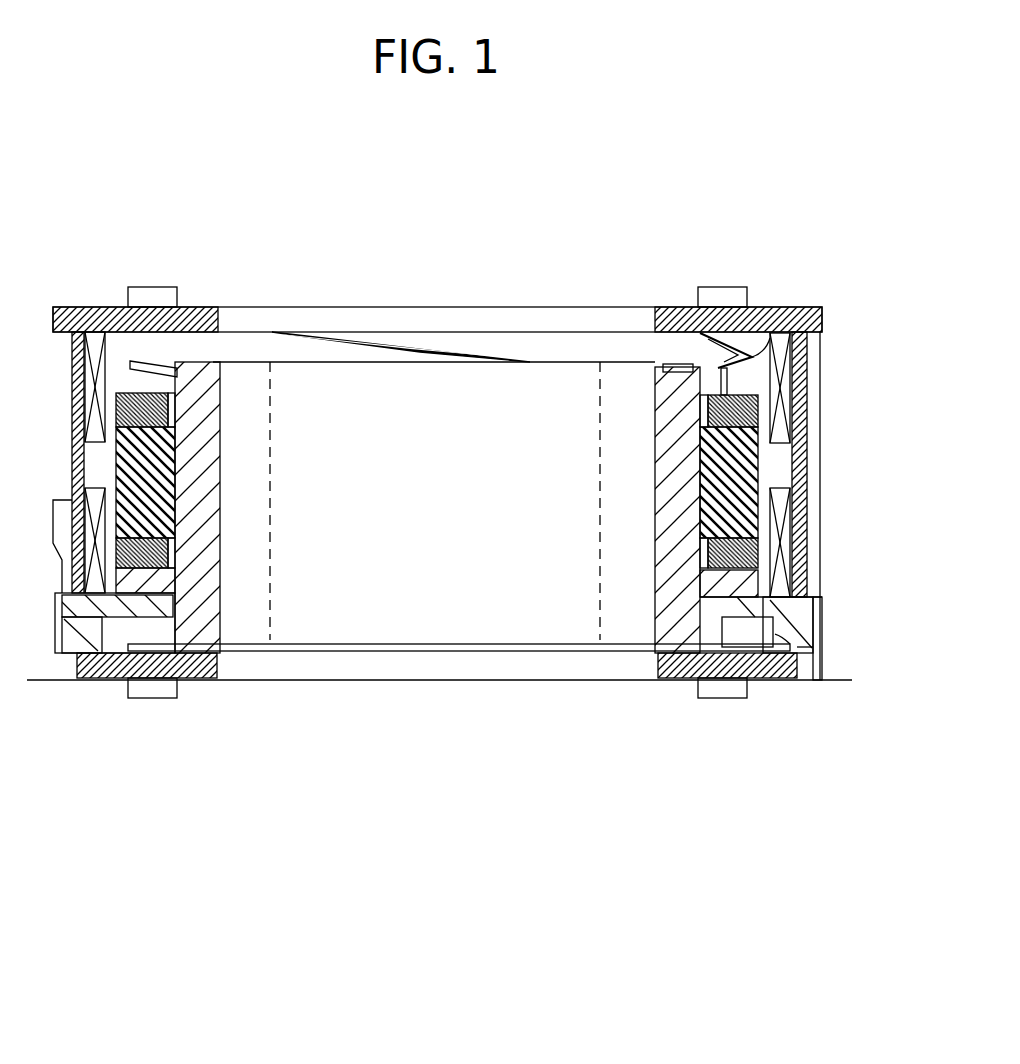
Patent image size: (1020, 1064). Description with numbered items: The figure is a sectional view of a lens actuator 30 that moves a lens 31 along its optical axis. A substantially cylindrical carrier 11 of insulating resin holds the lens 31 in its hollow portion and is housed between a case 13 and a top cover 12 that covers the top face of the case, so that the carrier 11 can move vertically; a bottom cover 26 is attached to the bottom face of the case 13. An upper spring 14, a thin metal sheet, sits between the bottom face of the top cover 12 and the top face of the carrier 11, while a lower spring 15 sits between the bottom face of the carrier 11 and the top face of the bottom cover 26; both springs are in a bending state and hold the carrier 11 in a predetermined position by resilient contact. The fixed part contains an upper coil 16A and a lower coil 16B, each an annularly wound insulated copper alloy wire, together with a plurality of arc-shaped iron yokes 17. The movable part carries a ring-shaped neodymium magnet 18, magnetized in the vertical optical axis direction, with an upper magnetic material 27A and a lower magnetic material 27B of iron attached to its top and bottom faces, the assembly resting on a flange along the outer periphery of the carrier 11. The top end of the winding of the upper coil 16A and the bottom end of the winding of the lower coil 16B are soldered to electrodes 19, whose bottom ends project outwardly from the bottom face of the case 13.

The carrier 11 is at (670, 466).
The top cover 12 is at (788, 310).
The case 13 is at (787, 630).
The upper spring 14 is at (418, 347).
The lower spring 15 is at (737, 653).
The upper coil 16A is at (783, 392).
The lower coil 16B is at (783, 542).
The yoke 17 is at (803, 472).
The magnet 18 is at (747, 475).
The electrode 19 is at (845, 682).
The bottom cover 26 is at (110, 672).
The upper magnetic material 27A is at (722, 405).
The lower magnetic material 27B is at (732, 553).
The lens actuator 30 is at (476, 556).
The lens 31 is at (270, 628).